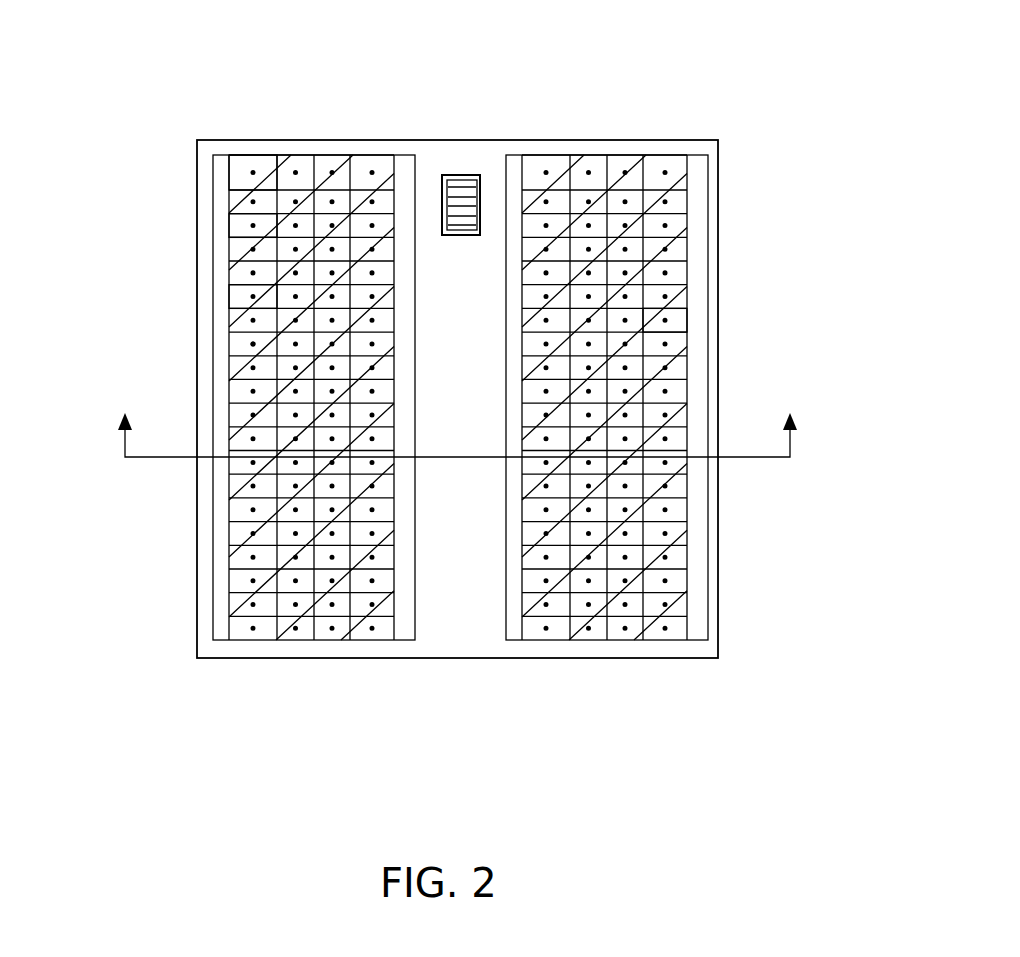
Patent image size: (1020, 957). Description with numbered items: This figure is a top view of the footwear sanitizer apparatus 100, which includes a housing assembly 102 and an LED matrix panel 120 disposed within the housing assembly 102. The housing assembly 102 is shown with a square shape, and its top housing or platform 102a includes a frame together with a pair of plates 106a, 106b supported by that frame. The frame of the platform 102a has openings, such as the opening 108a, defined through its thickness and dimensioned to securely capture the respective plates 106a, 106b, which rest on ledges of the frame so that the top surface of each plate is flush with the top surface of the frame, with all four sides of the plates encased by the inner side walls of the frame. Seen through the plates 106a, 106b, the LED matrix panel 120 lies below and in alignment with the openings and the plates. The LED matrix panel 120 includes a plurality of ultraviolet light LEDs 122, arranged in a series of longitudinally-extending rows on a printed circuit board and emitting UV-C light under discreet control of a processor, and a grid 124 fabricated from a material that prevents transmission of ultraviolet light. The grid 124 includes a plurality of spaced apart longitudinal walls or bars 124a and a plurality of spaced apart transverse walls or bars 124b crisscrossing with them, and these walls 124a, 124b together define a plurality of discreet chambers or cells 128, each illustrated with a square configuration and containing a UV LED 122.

The apparatus 100 is at (812, 140).
The housing assembly 102 is at (448, 126).
The platform 102a is at (495, 150).
The plate 106a is at (293, 159).
The plate 106b is at (678, 158).
The opening 108a is at (247, 155).
The LED matrix panel 120 is at (230, 296).
The ultraviolet light LED 122 is at (250, 343).
The grid 124 is at (236, 181).
The longitudinal wall 124a is at (250, 222).
The transverse wall 124b is at (231, 238).
The cell 128 is at (305, 220).